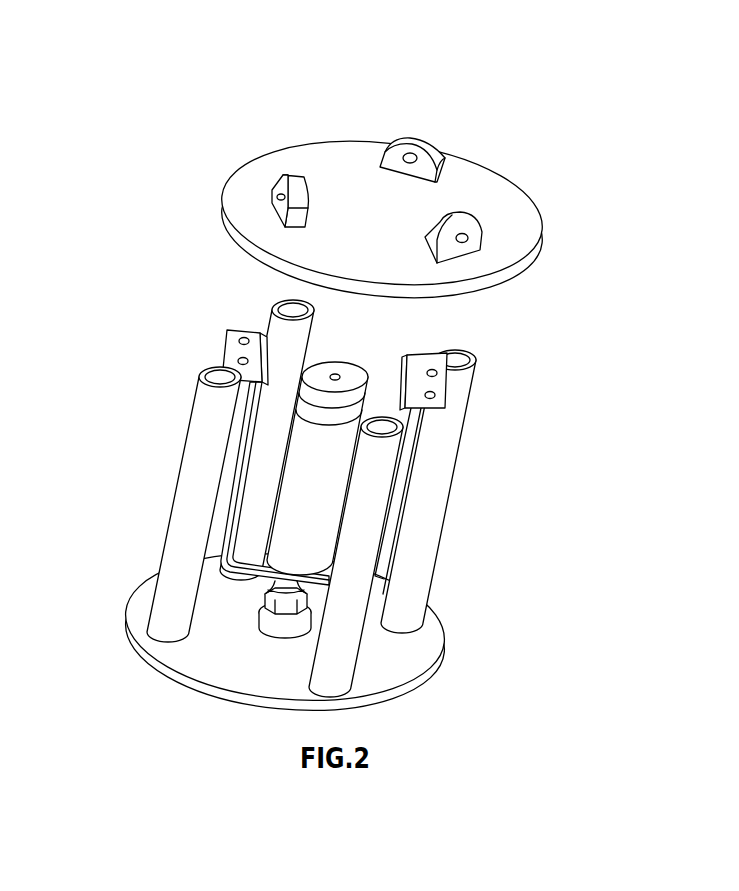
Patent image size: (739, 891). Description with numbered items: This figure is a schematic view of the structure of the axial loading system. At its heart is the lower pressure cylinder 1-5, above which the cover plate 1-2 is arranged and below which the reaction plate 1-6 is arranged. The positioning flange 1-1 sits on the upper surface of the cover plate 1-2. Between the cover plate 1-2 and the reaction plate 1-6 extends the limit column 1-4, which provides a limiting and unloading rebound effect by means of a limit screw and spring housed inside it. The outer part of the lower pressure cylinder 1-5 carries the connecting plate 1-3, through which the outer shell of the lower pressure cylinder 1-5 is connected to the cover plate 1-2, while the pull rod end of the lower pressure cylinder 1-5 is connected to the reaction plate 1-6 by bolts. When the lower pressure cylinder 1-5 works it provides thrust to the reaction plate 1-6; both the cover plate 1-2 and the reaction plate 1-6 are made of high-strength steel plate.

The positioning flange 1-1 is at (393, 152).
The cover plate 1-2 is at (283, 243).
The connecting plate 1-3 is at (240, 350).
The limit column 1-4 is at (192, 498).
The lower pressure cylinder 1-5 is at (360, 364).
The reaction plate 1-6 is at (387, 650).